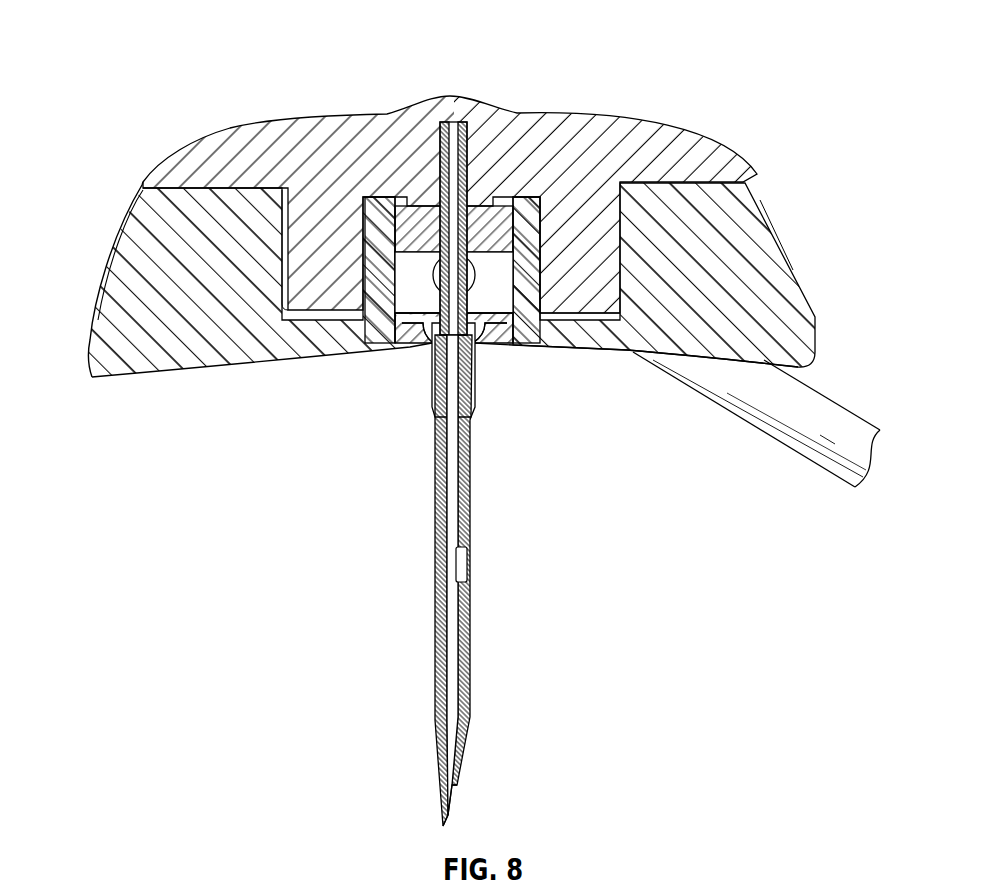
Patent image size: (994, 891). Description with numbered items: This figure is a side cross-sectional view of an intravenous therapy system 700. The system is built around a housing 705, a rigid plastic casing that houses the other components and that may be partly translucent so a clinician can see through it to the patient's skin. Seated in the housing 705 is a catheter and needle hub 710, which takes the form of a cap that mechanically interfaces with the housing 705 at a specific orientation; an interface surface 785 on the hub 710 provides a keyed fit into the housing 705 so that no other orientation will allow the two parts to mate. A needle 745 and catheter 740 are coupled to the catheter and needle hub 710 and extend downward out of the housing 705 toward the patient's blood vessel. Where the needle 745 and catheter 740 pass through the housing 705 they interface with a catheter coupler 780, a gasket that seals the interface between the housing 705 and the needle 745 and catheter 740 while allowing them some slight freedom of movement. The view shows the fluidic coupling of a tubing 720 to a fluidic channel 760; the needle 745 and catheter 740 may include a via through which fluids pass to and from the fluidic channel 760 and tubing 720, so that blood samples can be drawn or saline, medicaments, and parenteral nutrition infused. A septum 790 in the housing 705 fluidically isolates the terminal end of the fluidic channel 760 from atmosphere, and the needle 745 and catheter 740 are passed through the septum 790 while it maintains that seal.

The intravenous therapy system 700 is at (138, 52).
The housing 705 is at (150, 240).
The catheter and needle hub 710 is at (208, 157).
The tubing 720 is at (833, 420).
The catheter 740 is at (470, 628).
The needle 745 is at (453, 787).
The fluidic channel 760 is at (468, 287).
The catheter coupler 780 is at (432, 381).
The interface surface 785 is at (592, 265).
The septum 790 is at (478, 222).